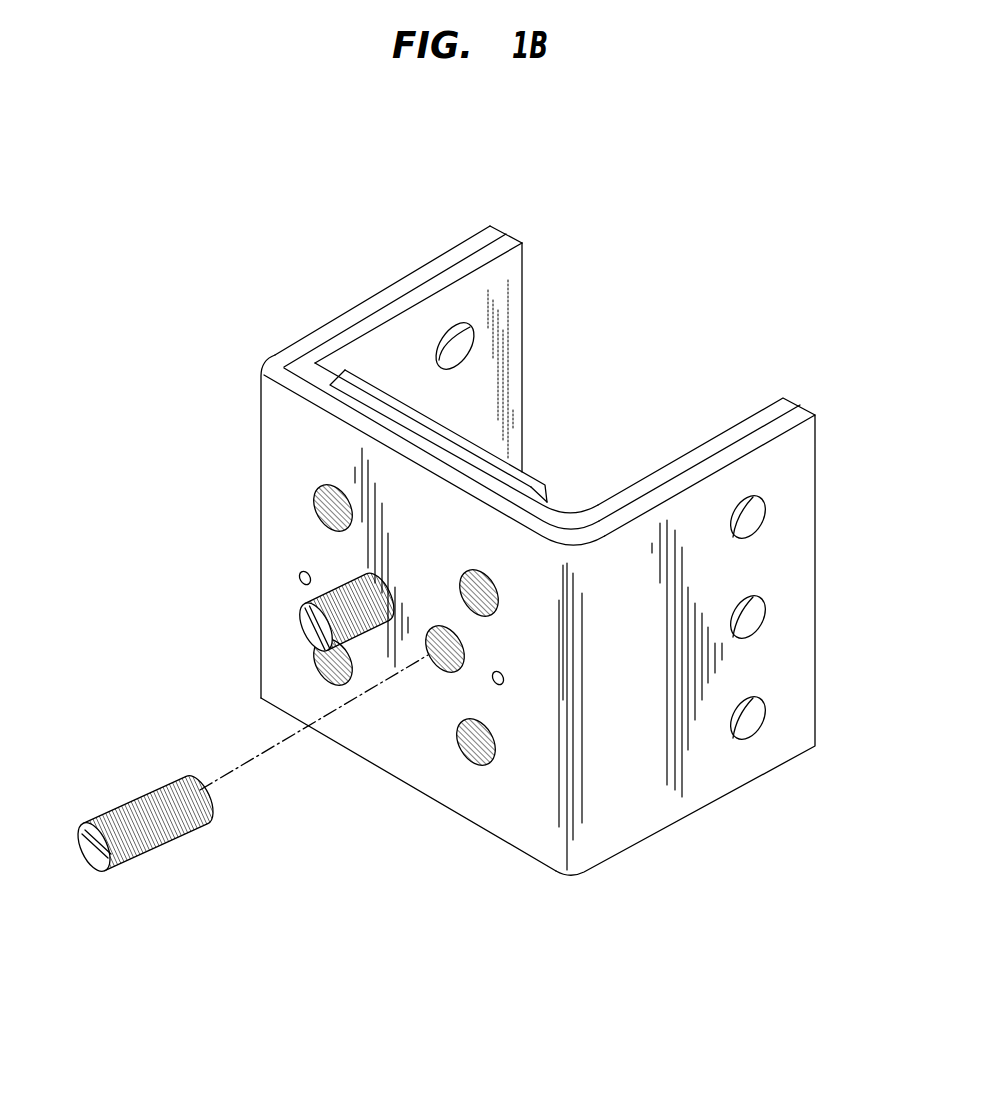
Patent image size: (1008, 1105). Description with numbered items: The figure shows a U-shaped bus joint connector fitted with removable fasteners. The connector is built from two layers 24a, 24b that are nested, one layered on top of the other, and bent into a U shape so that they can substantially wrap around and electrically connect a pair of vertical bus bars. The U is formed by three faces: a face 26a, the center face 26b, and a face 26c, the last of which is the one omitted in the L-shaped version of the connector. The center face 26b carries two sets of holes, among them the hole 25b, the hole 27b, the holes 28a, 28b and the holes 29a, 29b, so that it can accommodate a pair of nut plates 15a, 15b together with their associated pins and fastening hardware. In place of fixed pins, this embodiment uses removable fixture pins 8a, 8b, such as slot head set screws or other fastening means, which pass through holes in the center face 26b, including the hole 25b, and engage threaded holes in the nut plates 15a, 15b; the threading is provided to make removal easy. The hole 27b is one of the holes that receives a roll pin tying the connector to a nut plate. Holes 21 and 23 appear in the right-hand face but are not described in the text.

The removable fixture pin 8a is at (303, 622).
The removable fixture pin 8b is at (115, 806).
The nut plate 15a is at (430, 416).
The nut plate 15b is at (543, 481).
The mounting hole 21 is at (767, 510).
The mounting hole 23 is at (767, 709).
The layer of the bus joint connector 24a is at (502, 228).
The layer of the bus joint connector 24b is at (517, 238).
The hole 25b is at (443, 672).
The face 26a is at (338, 316).
The center face 26b is at (412, 798).
The face 26c is at (698, 783).
The hole 27b is at (300, 578).
The hole 28a is at (312, 508).
The hole 28b is at (462, 582).
The hole 29a is at (313, 660).
The hole 29b is at (494, 768).